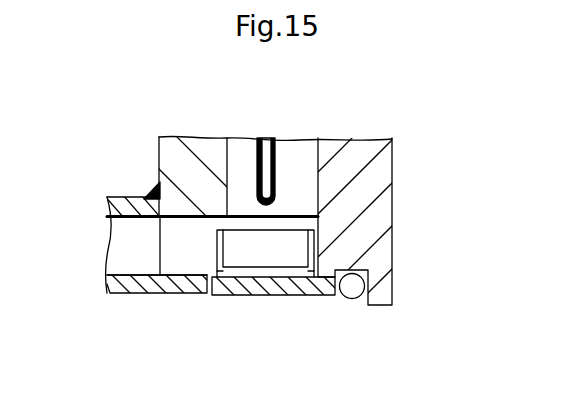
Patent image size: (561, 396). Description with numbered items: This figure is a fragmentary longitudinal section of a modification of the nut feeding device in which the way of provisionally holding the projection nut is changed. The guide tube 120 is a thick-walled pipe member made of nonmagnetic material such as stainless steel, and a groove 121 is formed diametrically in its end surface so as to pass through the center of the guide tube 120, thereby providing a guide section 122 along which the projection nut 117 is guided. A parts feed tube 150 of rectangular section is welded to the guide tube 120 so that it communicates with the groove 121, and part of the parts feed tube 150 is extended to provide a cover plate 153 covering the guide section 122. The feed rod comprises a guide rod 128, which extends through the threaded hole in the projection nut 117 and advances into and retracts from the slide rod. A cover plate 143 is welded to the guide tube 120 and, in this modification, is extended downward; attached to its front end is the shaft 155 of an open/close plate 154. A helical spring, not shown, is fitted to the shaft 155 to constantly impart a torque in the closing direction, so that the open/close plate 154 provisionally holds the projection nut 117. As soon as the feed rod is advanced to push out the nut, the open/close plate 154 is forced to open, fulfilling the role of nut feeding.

The guide tube 120 is at (157, 153).
The guide rod 128 is at (257, 161).
The cover plate 143 is at (392, 174).
The parts feed tube 150 is at (132, 197).
The projection nut 117 is at (302, 243).
The groove 121 is at (167, 248).
The guide section 122 is at (172, 262).
The cover plate 153 is at (190, 297).
The open/close plate 154 is at (264, 297).
The shaft 155 is at (350, 298).